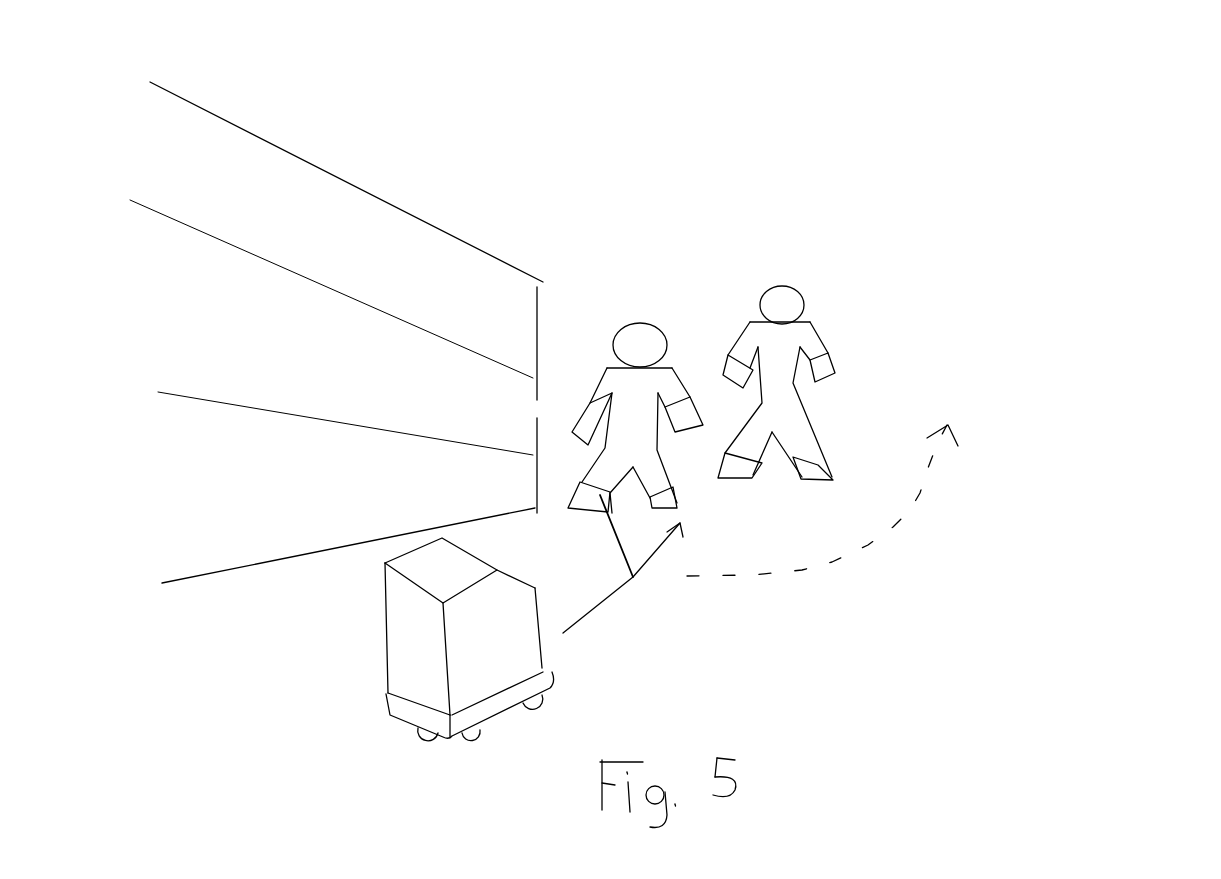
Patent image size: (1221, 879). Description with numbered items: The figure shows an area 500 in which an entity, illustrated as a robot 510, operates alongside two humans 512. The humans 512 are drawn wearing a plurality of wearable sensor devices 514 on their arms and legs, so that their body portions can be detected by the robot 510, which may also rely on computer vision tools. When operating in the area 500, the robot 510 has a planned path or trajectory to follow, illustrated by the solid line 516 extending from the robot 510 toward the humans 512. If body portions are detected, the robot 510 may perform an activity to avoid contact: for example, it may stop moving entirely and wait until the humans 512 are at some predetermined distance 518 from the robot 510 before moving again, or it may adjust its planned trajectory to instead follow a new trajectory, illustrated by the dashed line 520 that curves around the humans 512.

The area 500 is at (1208, 455).
The robot 510 is at (512, 664).
The humans 512 is at (772, 290).
The wearable sensor devices 514 is at (592, 403).
The solid line 516 is at (593, 617).
The predetermined distance 518 is at (626, 556).
The dashed line 520 is at (897, 523).